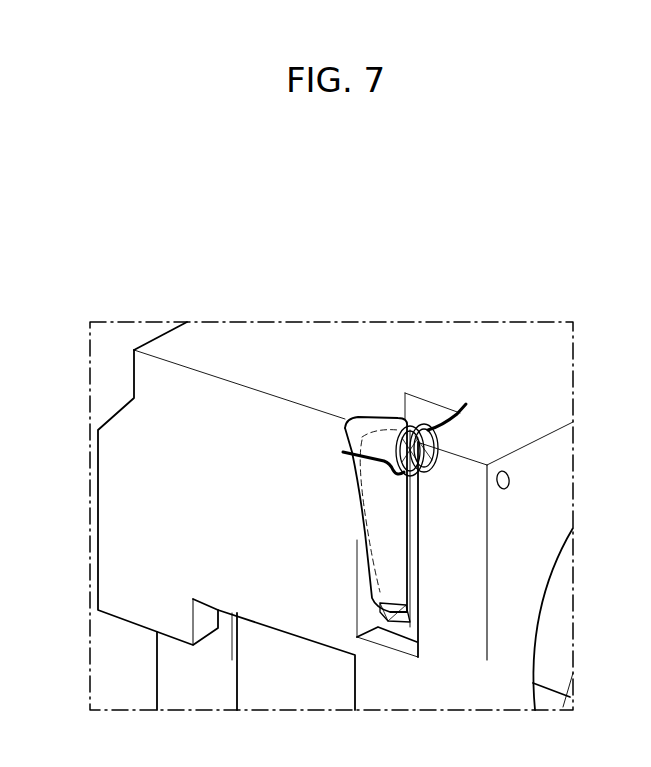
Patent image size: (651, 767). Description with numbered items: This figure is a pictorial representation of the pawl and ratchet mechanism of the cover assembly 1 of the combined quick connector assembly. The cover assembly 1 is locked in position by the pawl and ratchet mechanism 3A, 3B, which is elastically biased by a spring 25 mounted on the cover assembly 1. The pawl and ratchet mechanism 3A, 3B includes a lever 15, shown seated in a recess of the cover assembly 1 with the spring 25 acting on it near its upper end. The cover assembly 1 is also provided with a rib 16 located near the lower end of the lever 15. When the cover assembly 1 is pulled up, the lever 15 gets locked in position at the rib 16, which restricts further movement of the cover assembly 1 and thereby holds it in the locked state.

The cover assembly 1 is at (124, 520).
The pawl and ratchet mechanism 3A is at (396, 403).
The pawl and ratchet mechanism 3B is at (399, 374).
The lever 15 is at (372, 538).
The rib 16 is at (378, 612).
The spring 25 is at (466, 404).